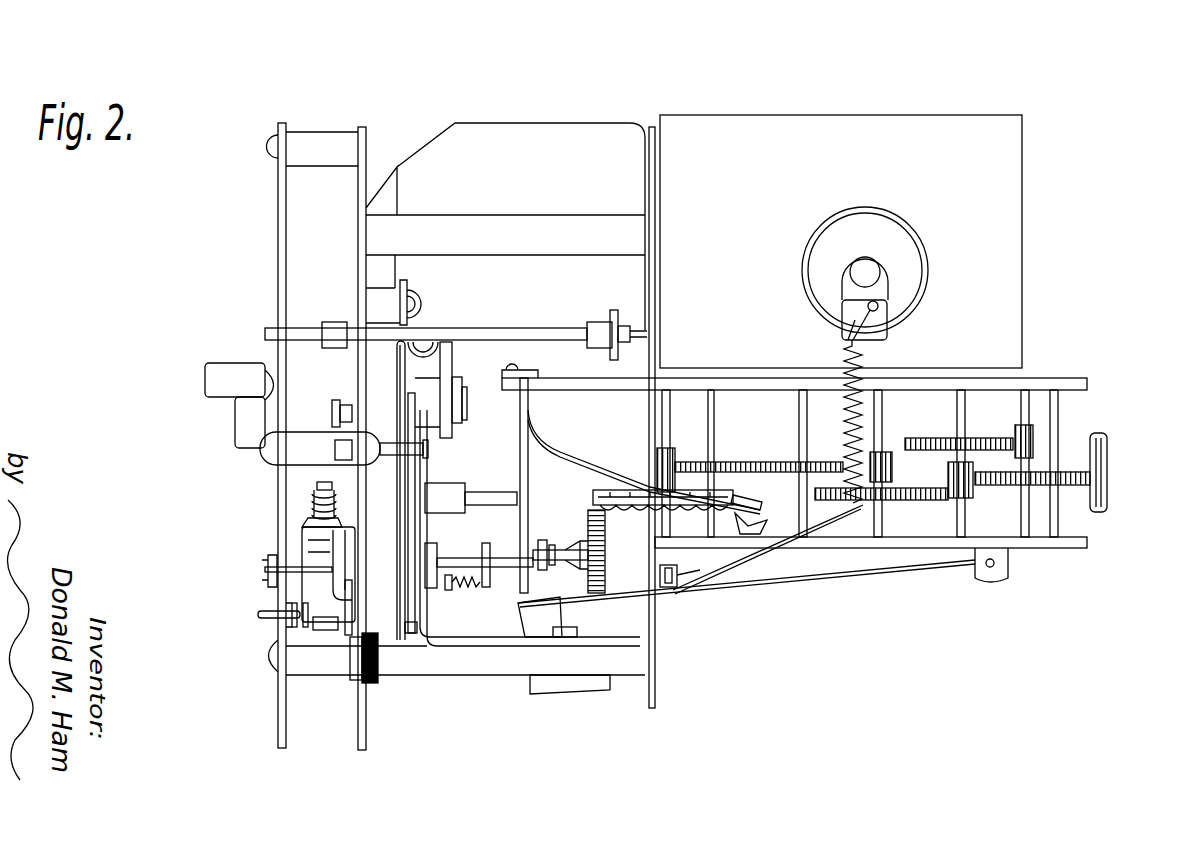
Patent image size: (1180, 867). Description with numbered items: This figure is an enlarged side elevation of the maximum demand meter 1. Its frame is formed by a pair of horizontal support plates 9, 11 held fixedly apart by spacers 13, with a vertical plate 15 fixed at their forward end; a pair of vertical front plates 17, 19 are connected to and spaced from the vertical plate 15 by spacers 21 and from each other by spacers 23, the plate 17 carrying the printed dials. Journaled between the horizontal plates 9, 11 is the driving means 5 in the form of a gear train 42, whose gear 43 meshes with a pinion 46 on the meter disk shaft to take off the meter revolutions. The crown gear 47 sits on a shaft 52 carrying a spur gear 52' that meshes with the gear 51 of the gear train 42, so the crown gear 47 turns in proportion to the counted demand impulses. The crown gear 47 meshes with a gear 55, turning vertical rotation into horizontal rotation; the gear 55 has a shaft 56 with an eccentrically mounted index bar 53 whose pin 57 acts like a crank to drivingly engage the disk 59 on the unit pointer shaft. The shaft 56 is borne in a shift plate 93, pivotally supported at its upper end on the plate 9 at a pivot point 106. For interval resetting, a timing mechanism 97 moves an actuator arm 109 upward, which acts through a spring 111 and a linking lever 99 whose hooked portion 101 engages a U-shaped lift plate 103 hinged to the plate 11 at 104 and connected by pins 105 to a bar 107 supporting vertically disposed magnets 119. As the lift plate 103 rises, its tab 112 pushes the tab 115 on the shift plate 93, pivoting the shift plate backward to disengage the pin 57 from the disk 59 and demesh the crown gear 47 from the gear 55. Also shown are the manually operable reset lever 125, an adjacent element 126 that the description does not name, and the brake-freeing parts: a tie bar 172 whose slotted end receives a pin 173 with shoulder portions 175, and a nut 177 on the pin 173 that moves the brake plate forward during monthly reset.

The maximum demand meter 1 is at (458, 118).
The driving means 5 is at (1007, 512).
The horizontal support plate 9 is at (1040, 385).
The horizontal support plate 11 is at (1087, 549).
The spacer 13 is at (1060, 413).
The vertical plate 15 is at (655, 698).
The vertical front plate 17 is at (284, 123).
The vertical front plate 19 is at (366, 133).
The spacer 21 is at (430, 663).
The spacer 23 is at (316, 150).
The gear train 42 is at (906, 438).
The gear 43 is at (1068, 470).
The pinion 46 is at (1110, 458).
The crown gear 47 is at (600, 492).
The gear 51 is at (727, 462).
The shaft 52 is at (685, 361).
The spur gear 52' is at (705, 410).
The index bar 53 is at (485, 545).
The gear 55 is at (605, 553).
The rotatable shaft portion 56 is at (500, 550).
The pin 57 is at (456, 590).
The disk 59 is at (445, 530).
The shift plate 93 is at (520, 446).
The timing mechanism 97 is at (1022, 233).
The linking lever 99 is at (718, 588).
The hooked portion 101 is at (668, 590).
The lift plate 103 is at (853, 578).
The hinge 104 is at (993, 581).
The pin 105 is at (518, 606).
The pivot point 106 is at (530, 373).
The bar 107 is at (560, 695).
The actuator arm 109 is at (875, 272).
The spring 111 is at (870, 351).
The tab 112 is at (778, 567).
The tab 115 is at (565, 450).
The magnet 119 is at (578, 631).
The reset lever 125 is at (212, 363).
The solenoid 126 is at (305, 548).
The tie bar 172 is at (310, 596).
The pin 173 is at (258, 614).
The shoulder portion 175 is at (292, 622).
The nut 177 is at (347, 632).